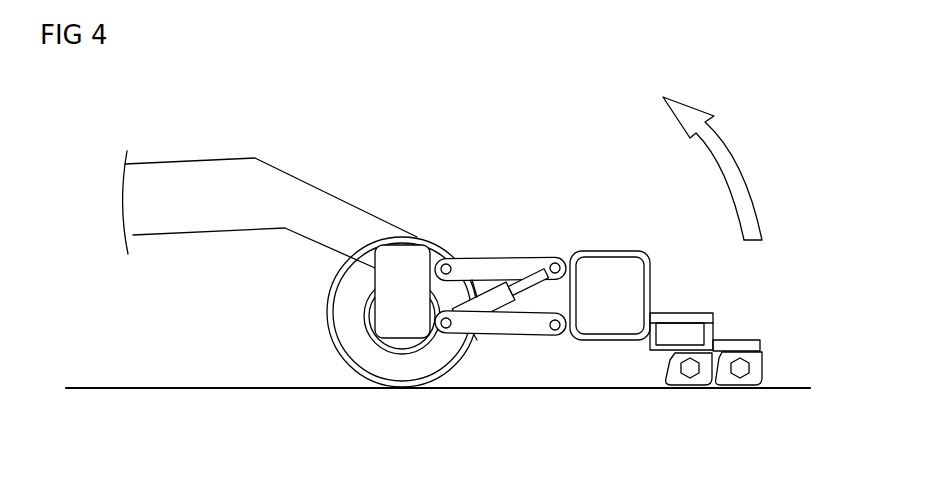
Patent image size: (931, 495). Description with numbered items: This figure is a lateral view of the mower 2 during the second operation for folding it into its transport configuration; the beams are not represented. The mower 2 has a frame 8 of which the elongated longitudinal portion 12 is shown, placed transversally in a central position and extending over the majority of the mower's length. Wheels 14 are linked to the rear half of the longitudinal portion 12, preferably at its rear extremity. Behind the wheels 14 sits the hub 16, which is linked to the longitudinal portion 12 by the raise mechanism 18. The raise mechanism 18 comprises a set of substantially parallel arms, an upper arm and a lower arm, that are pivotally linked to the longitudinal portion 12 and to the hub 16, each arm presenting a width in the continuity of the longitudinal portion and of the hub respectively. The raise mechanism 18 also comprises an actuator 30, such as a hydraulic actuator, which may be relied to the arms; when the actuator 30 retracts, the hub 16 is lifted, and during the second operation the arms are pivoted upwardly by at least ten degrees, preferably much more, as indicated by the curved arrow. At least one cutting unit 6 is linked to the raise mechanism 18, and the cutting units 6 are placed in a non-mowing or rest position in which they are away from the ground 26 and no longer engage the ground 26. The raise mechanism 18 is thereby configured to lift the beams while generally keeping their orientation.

The mower 2 is at (603, 90).
The cutting unit 6 is at (718, 357).
The frame 8 is at (348, 128).
The longitudinal portion 12 is at (186, 193).
The wheel 14 is at (352, 362).
The hub 16 is at (624, 262).
The raise mechanism 18 is at (503, 136).
The ground 26 is at (120, 387).
The actuator 30 is at (532, 270).